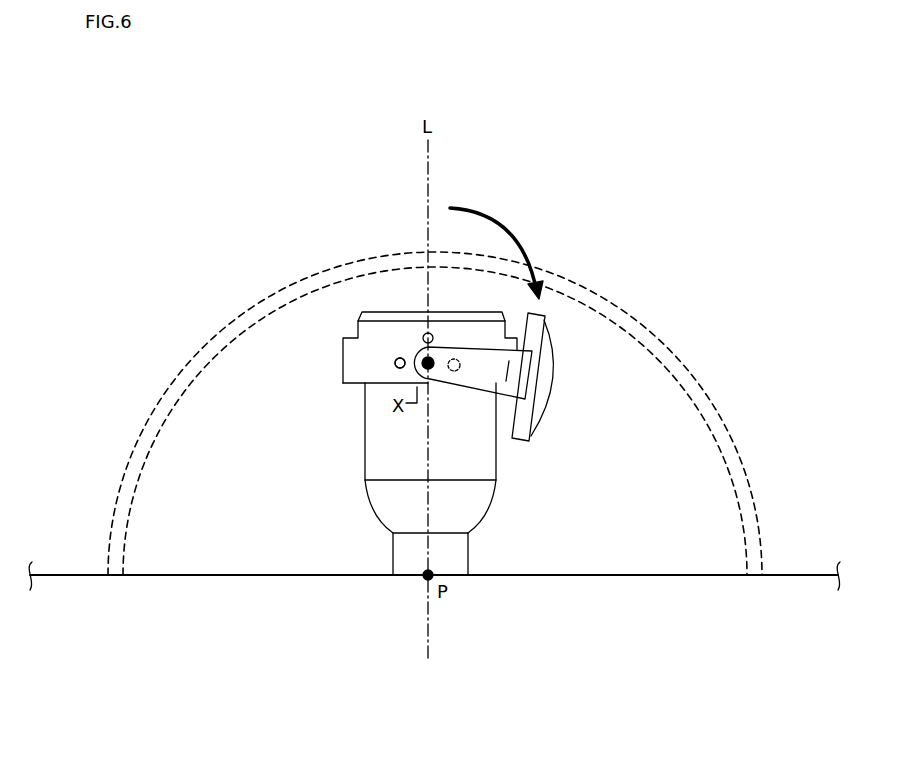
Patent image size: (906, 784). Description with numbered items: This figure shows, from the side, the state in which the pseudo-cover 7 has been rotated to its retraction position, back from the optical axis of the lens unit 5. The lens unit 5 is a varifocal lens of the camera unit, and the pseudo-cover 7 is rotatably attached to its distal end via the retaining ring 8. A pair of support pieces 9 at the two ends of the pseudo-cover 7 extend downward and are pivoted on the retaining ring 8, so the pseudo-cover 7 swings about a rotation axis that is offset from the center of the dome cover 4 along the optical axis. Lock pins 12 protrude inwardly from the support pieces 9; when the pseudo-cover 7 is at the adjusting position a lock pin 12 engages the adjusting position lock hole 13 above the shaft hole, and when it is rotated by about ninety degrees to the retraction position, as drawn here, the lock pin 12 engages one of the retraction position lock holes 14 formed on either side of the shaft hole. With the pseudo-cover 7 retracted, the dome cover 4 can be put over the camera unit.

The dome cover 4 is at (720, 412).
The lens unit 5 is at (365, 447).
The pseudo-cover 7 is at (549, 362).
The retaining ring 8 is at (342, 355).
The support pieces 9 is at (546, 397).
The lock pins 12 is at (456, 373).
The adjusting position lock hole 13 is at (427, 332).
The retraction position lock holes 14 is at (395, 363).